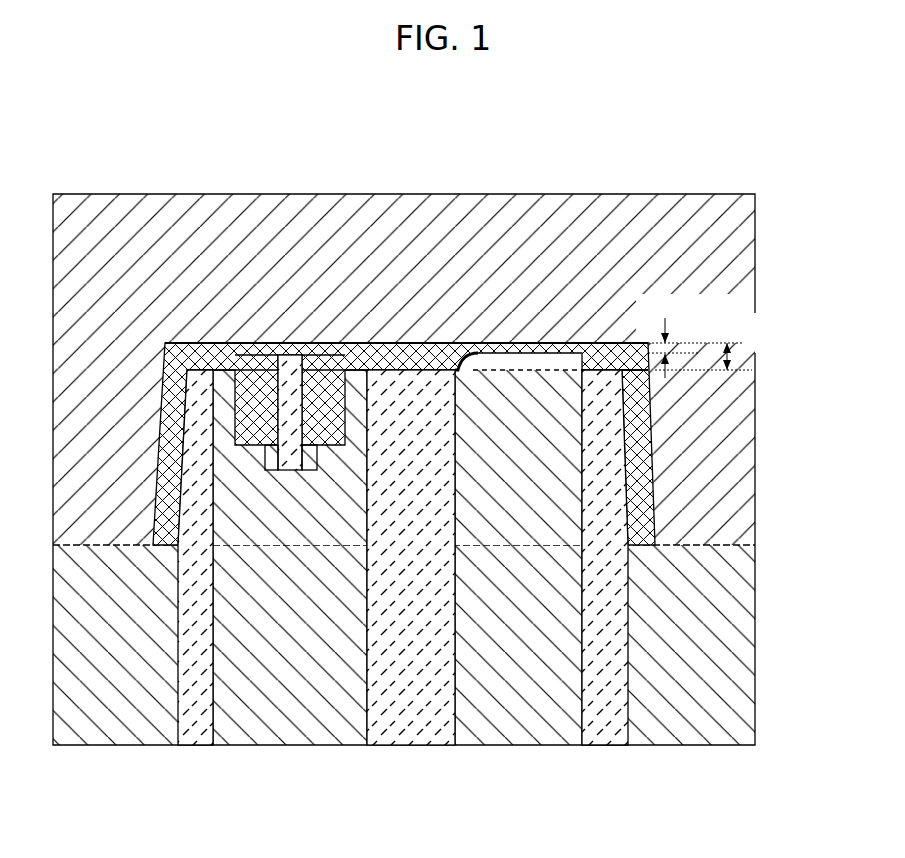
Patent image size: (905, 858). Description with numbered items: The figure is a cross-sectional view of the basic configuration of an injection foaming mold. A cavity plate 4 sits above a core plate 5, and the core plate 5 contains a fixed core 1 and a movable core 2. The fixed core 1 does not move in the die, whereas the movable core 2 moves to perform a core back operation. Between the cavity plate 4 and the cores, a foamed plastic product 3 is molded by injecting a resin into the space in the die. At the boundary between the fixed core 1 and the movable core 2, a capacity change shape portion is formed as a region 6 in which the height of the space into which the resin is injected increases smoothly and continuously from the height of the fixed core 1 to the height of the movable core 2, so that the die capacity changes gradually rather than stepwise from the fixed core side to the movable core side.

The fixed core 1 is at (513, 663).
The movable core 2 is at (400, 645).
The foamed plastic product 3 is at (417, 343).
The cavity plate 4 is at (243, 262).
The core plate 5 is at (113, 655).
The region in which the height of the die space increases continuously 6 is at (470, 357).